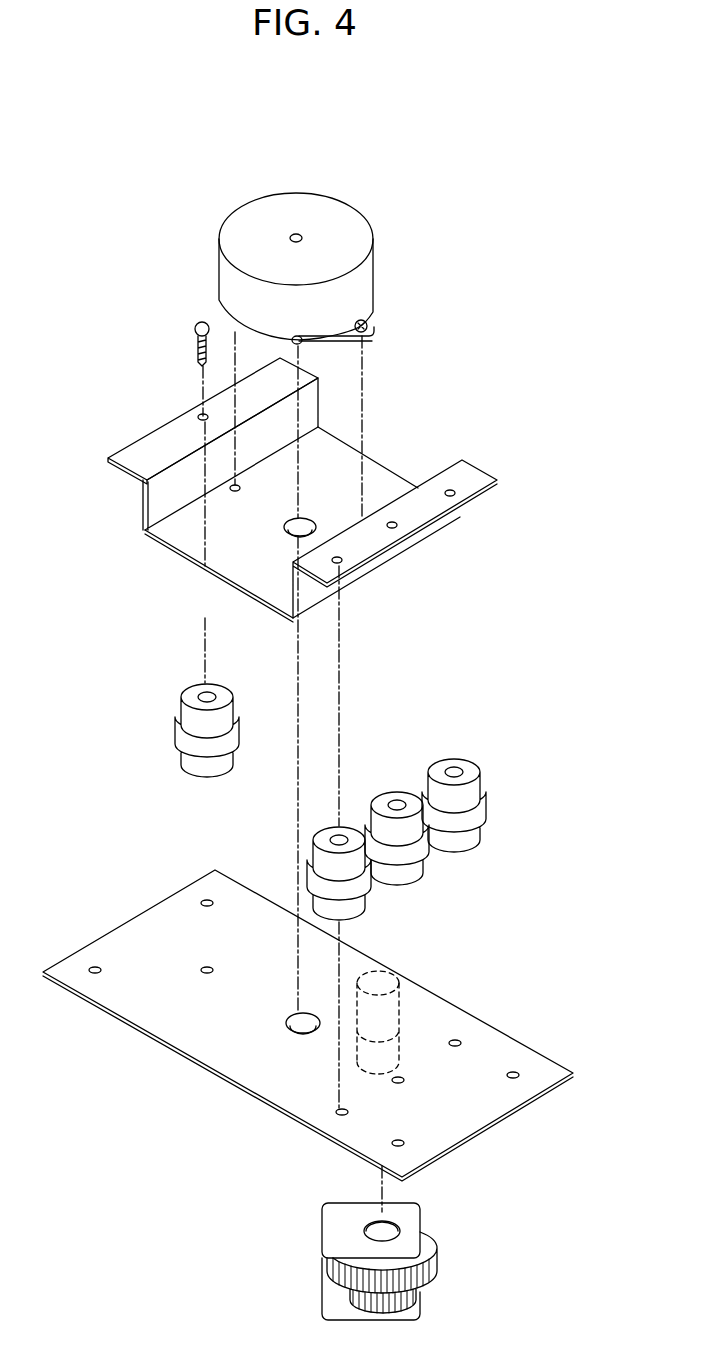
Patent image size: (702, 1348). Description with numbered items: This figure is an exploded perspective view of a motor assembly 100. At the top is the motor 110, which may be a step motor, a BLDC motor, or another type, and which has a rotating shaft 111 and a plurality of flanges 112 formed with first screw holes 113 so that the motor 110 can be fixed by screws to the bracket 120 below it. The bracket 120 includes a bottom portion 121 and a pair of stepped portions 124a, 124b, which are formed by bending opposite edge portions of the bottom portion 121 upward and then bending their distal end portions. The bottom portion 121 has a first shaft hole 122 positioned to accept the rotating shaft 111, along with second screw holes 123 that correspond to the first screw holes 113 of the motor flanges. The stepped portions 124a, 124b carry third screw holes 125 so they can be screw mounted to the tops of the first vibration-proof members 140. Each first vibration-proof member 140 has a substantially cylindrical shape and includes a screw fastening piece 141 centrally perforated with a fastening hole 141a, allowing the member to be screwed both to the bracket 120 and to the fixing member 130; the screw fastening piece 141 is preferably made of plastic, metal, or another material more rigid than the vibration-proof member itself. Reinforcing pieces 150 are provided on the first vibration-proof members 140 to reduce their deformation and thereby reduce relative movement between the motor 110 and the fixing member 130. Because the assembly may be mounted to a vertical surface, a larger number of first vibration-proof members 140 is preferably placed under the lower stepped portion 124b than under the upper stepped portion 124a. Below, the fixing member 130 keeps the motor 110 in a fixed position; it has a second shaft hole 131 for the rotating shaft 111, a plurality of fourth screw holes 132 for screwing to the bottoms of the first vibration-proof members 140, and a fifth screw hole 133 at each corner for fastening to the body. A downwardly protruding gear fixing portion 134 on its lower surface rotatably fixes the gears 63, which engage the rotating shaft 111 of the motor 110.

The motor assembly 100 is at (246, 107).
The motor 110 is at (340, 222).
The rotating shaft 111 is at (300, 343).
The flanges 112 is at (374, 332).
The first screw holes 113 is at (362, 320).
The bracket 120 is at (321, 472).
The bottom portion 121 is at (190, 540).
The first shaft hole 122 is at (277, 517).
The second screw holes 123 is at (150, 520).
The upper stepped portion 124a is at (135, 455).
The lower stepped portion 124b is at (478, 483).
The third screw holes 125 is at (203, 416).
The fixing member 130 is at (302, 1031).
The second shaft hole 131 is at (290, 1023).
The fourth screw holes 132 is at (207, 966).
The fifth screw hole 133 is at (95, 968).
The gear fixing portion 134 is at (400, 1015).
The first vibration-proof members 140 is at (380, 802).
The screw fastening piece 141 is at (465, 780).
The fastening hole 141a is at (452, 768).
The reinforcing pieces 150 is at (473, 818).
The gears 63 is at (438, 1283).